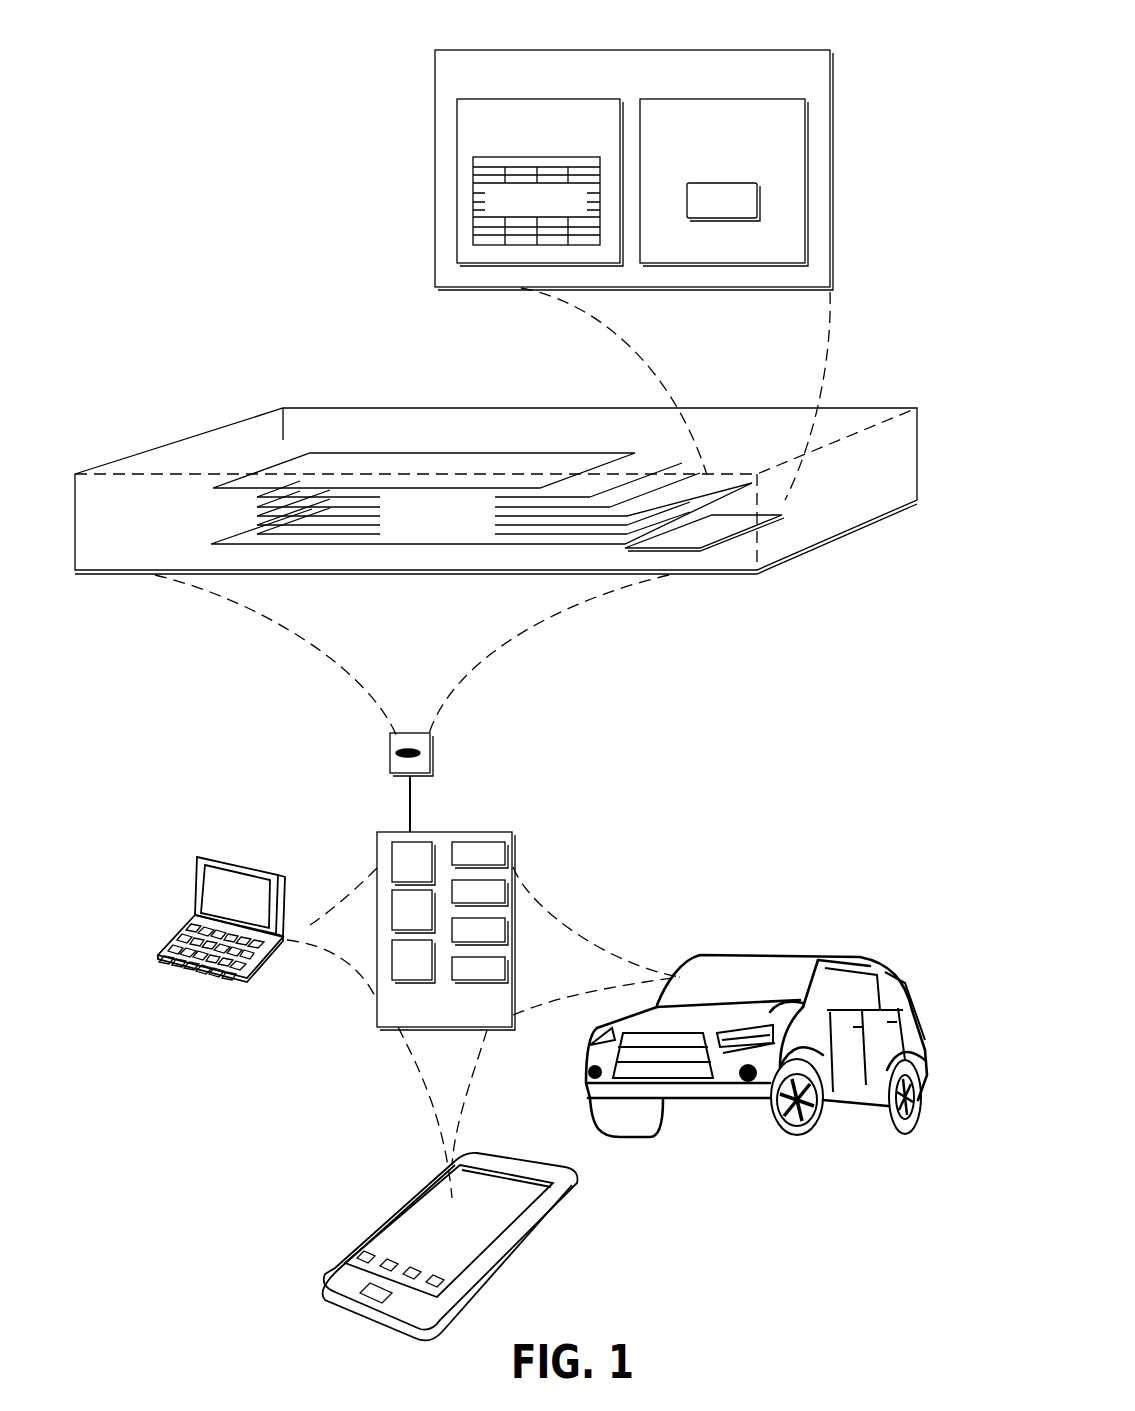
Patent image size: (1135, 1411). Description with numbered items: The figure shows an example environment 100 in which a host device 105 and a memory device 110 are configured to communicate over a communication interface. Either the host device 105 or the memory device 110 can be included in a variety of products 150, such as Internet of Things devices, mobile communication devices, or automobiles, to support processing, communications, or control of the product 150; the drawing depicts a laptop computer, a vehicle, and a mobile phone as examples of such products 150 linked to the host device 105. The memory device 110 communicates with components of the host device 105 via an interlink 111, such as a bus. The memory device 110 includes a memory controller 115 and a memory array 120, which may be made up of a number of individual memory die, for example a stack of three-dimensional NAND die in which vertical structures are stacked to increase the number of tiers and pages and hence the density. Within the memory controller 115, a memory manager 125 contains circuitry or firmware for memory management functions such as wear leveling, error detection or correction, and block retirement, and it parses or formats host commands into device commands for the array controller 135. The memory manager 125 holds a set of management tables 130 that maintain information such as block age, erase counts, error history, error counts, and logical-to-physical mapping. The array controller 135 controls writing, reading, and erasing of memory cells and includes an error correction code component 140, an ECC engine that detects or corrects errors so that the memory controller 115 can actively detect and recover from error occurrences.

The environment 100 is at (823, 32).
The host device 105 is at (377, 845).
The memory device 110 is at (226, 428).
The interlink 111 is at (410, 805).
The memory controller 115 is at (435, 50).
The memory array 120 is at (495, 453).
The memory manager 125 is at (457, 135).
The management tables 130 is at (473, 200).
The array controller 135 is at (805, 135).
The error correction code (ECC) component 140 is at (757, 200).
The products 150 is at (203, 856).